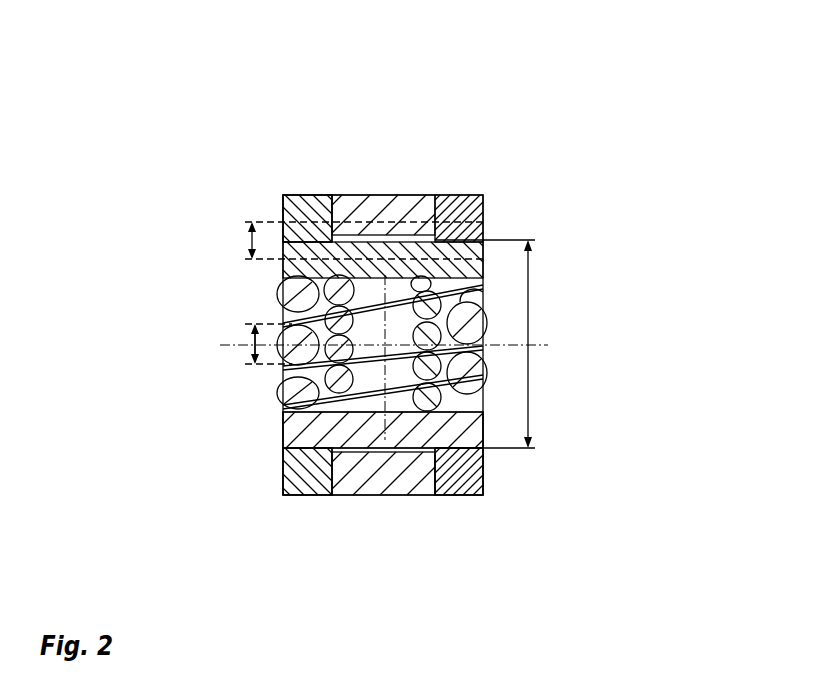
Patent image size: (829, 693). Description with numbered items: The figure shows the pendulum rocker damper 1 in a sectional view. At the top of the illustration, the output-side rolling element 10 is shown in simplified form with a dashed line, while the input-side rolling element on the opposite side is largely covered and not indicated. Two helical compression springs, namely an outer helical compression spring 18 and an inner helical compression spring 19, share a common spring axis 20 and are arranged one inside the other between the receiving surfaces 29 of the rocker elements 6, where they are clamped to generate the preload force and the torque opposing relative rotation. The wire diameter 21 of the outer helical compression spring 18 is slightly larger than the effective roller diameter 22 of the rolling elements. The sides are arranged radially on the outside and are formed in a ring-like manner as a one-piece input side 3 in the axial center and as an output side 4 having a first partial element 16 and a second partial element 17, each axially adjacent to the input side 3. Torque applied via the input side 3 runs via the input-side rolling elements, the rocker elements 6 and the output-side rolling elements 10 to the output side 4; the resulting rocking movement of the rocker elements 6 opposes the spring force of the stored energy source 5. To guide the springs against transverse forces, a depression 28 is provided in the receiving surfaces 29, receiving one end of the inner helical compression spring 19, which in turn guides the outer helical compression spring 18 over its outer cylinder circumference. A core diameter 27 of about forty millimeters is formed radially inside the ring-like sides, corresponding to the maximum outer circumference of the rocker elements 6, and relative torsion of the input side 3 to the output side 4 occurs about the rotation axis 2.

The pendulum rocker damper 1 is at (722, 63).
The rotation axis 2 is at (544, 346).
The input side 3 is at (402, 203).
The output side 4 is at (447, 563).
The stored energy source 5 is at (170, 307).
The rocker elements 6 is at (483, 271).
The output-side rolling element 10 is at (310, 203).
The first partial element 16 is at (325, 494).
The second partial element 17 is at (445, 494).
The outer helical compression spring 18 is at (290, 393).
The inner helical compression spring 19 is at (323, 402).
The spring axis 20 is at (283, 322).
The wire diameter 21 is at (252, 350).
The roller diameter 22 is at (252, 243).
The core diameter 27 is at (528, 412).
The depression 28 is at (418, 282).
The receiving surfaces 29 is at (442, 403).